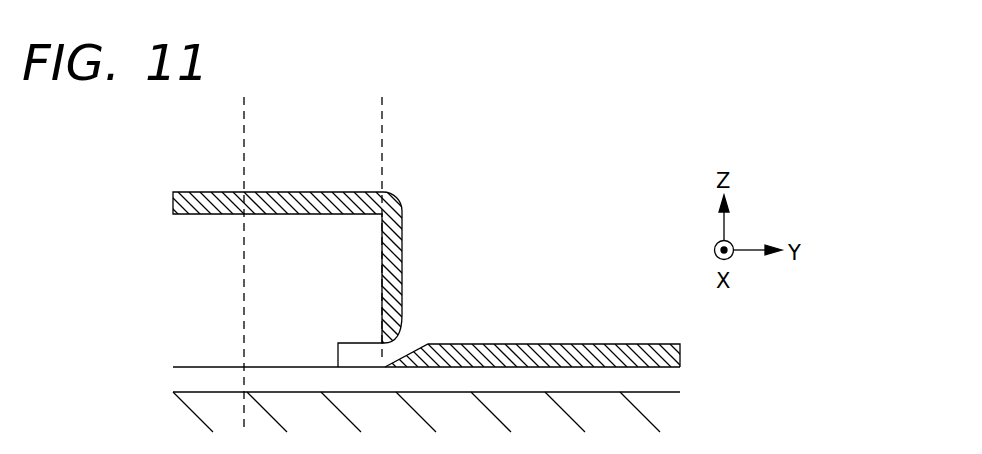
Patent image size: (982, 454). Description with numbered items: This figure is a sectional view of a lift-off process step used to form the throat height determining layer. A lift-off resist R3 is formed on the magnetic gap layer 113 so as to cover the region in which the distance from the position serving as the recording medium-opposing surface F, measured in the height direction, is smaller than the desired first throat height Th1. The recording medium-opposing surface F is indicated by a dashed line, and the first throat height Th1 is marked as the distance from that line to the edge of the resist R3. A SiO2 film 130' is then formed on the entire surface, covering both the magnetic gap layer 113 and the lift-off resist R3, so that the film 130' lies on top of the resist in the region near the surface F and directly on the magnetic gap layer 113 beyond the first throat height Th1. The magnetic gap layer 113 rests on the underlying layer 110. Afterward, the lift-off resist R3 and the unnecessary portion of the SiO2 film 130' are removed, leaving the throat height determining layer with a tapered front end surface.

The SiO2 film 130' is at (353, 245).
The magnetic gap layer 113 is at (657, 376).
The substrate 110 is at (657, 412).
The lift-off resist R3 is at (205, 238).
The recording medium-opposing surface F is at (246, 249).
The first throat height Th1 is at (381, 128).